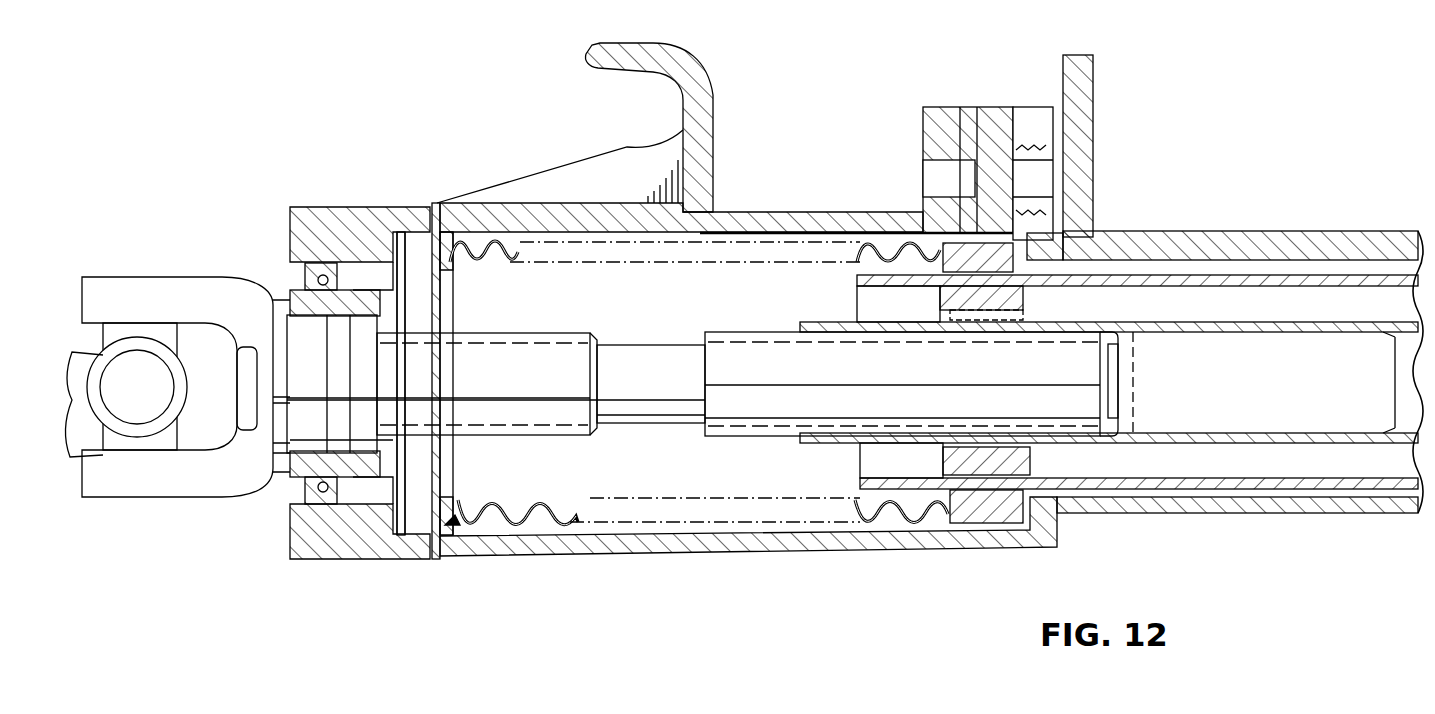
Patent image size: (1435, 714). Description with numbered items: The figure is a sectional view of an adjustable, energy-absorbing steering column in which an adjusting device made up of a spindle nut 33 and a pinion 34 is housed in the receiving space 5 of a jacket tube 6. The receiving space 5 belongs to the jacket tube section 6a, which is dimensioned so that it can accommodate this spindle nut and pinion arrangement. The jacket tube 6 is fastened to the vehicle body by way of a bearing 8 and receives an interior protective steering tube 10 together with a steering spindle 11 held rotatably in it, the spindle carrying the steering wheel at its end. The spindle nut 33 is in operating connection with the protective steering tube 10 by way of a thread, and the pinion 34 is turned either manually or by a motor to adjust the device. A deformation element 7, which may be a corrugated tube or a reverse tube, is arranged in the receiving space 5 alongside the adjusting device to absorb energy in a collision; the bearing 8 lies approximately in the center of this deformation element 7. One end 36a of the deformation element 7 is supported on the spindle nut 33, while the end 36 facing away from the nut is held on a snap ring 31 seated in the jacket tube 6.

The receiving space 5 is at (730, 483).
The jacket tube 6 is at (1218, 253).
The jacket tube section 6a is at (783, 548).
The deformation element 7 is at (572, 486).
The bearing 8 is at (660, 94).
The protective steering tube 10 is at (1309, 278).
The steering spindle 11 is at (1259, 420).
The snap ring 31 is at (425, 545).
The spindle nut 33 is at (997, 515).
The pinion 34 is at (988, 130).
The end of the deformation element 36 is at (455, 540).
The end of the deformation element 36a is at (920, 522).